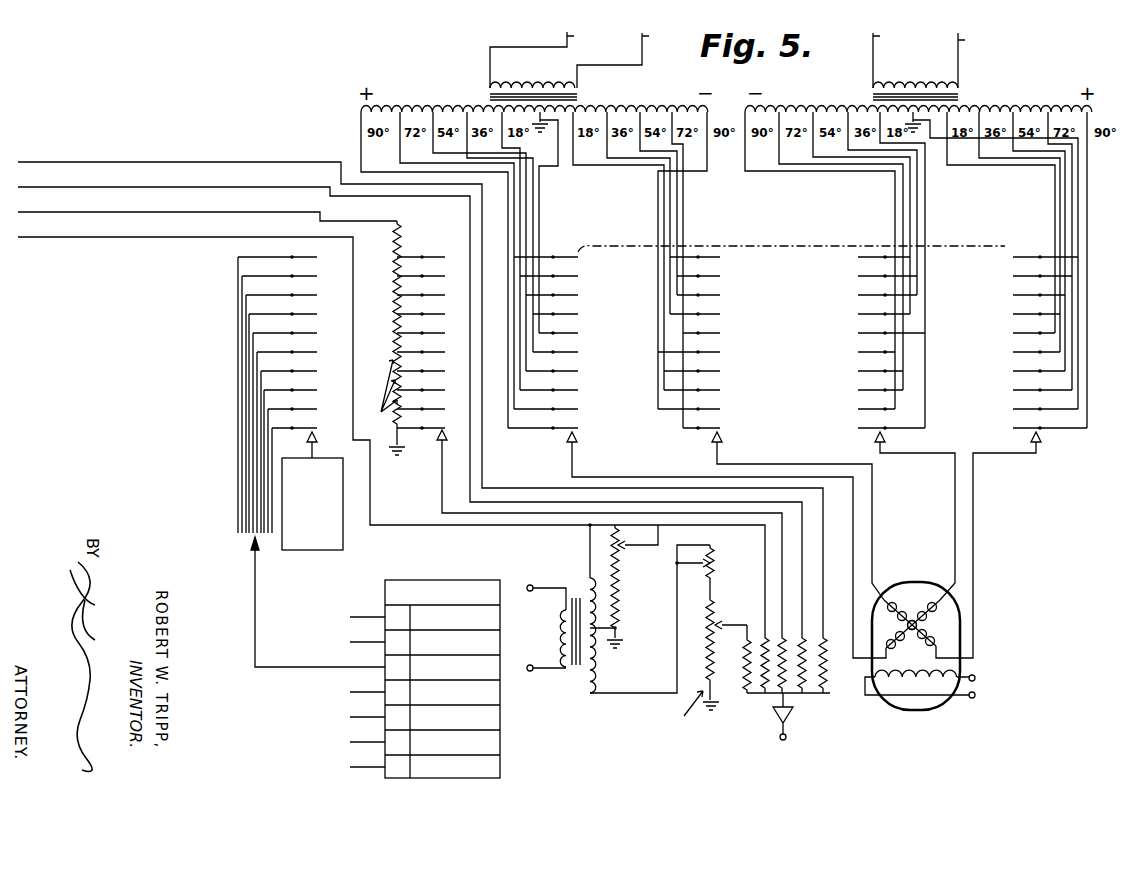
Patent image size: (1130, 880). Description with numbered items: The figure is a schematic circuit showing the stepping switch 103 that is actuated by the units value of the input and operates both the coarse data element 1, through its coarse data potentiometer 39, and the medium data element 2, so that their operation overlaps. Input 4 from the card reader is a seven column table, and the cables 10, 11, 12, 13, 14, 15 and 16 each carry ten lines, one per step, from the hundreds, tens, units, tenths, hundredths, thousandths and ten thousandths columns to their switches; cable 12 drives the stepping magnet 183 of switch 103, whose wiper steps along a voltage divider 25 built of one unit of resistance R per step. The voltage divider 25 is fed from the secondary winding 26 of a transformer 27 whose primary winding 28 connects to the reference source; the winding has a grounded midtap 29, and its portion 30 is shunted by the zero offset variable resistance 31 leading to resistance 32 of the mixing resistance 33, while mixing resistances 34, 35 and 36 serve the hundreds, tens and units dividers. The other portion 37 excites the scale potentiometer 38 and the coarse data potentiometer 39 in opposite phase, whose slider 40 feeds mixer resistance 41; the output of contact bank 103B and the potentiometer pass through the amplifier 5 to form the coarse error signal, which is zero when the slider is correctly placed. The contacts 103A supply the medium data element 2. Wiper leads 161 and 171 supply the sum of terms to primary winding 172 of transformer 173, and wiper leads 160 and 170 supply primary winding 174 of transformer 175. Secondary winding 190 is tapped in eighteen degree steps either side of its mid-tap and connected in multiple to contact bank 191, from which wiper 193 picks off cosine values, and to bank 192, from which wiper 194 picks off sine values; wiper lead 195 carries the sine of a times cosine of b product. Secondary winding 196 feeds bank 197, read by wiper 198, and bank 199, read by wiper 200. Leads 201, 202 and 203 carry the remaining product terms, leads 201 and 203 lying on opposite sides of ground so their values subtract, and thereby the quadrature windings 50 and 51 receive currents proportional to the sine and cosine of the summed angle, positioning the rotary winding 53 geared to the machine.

The coarse data element 1 is at (659, 731).
The medium data element 2 is at (880, 706).
The input from the card reader 4 is at (449, 579).
The amplifier 5 is at (788, 724).
The cable 10 is at (366, 612).
The cable 11 is at (366, 637).
The cable 12 is at (244, 431).
The cable 13 is at (368, 687).
The cable 14 is at (368, 712).
The cable 15 is at (368, 737).
The cable 16 is at (368, 762).
The voltage divider 25 is at (393, 305).
The secondary winding 26 is at (588, 580).
The transformer 27 is at (569, 672).
The primary winding 28 is at (552, 606).
The midtap 29 is at (619, 628).
The portion of winding 30 is at (604, 635).
The variable resistance 31 is at (622, 540).
The resistance 32 is at (772, 696).
The mixing resistance 33 is at (716, 712).
The mixing resistance 34 is at (828, 670).
The mixing resistance 35 is at (806, 698).
The mixing resistance 36 is at (767, 700).
The other portion of winding 37 is at (598, 670).
The variable resistance 38 is at (713, 550).
The coarse data potentiometer 39 is at (698, 650).
The slider 40 is at (728, 622).
The mixer resistance 41 is at (734, 666).
The quadrature winding 50 is at (888, 596).
The quadrature winding 51 is at (936, 596).
The rotary winding 53 is at (907, 674).
The stepping switch 103 is at (196, 357).
The contacts 103A is at (776, 240).
The contact bank 103B is at (424, 256).
The wiper lead 160 is at (896, 59).
The wiper lead 161 is at (549, 57).
The wiper lead 170 is at (979, 60).
The wiper lead 171 is at (632, 57).
The primary winding 172 is at (532, 75).
The transformer 173 is at (572, 98).
The primary winding 174 is at (915, 75).
The transformer 175 is at (962, 98).
The stepping magnet 183 is at (312, 491).
The secondary winding 190 is at (534, 96).
The contact bank 191 is at (562, 248).
The contact bank 192 is at (712, 248).
The wiper 193 is at (567, 443).
The wiper 194 is at (715, 450).
The wiper lead 195 is at (622, 468).
The secondary winding 196 is at (820, 108).
The contact bank 197 is at (876, 248).
The wiper 198 is at (876, 446).
The contact bank 199 is at (1023, 256).
The wiper 200 is at (1042, 446).
The lead 201 is at (873, 515).
The lead 202 is at (953, 490).
The lead 203 is at (975, 537).
The unit of resistance R is at (383, 395).